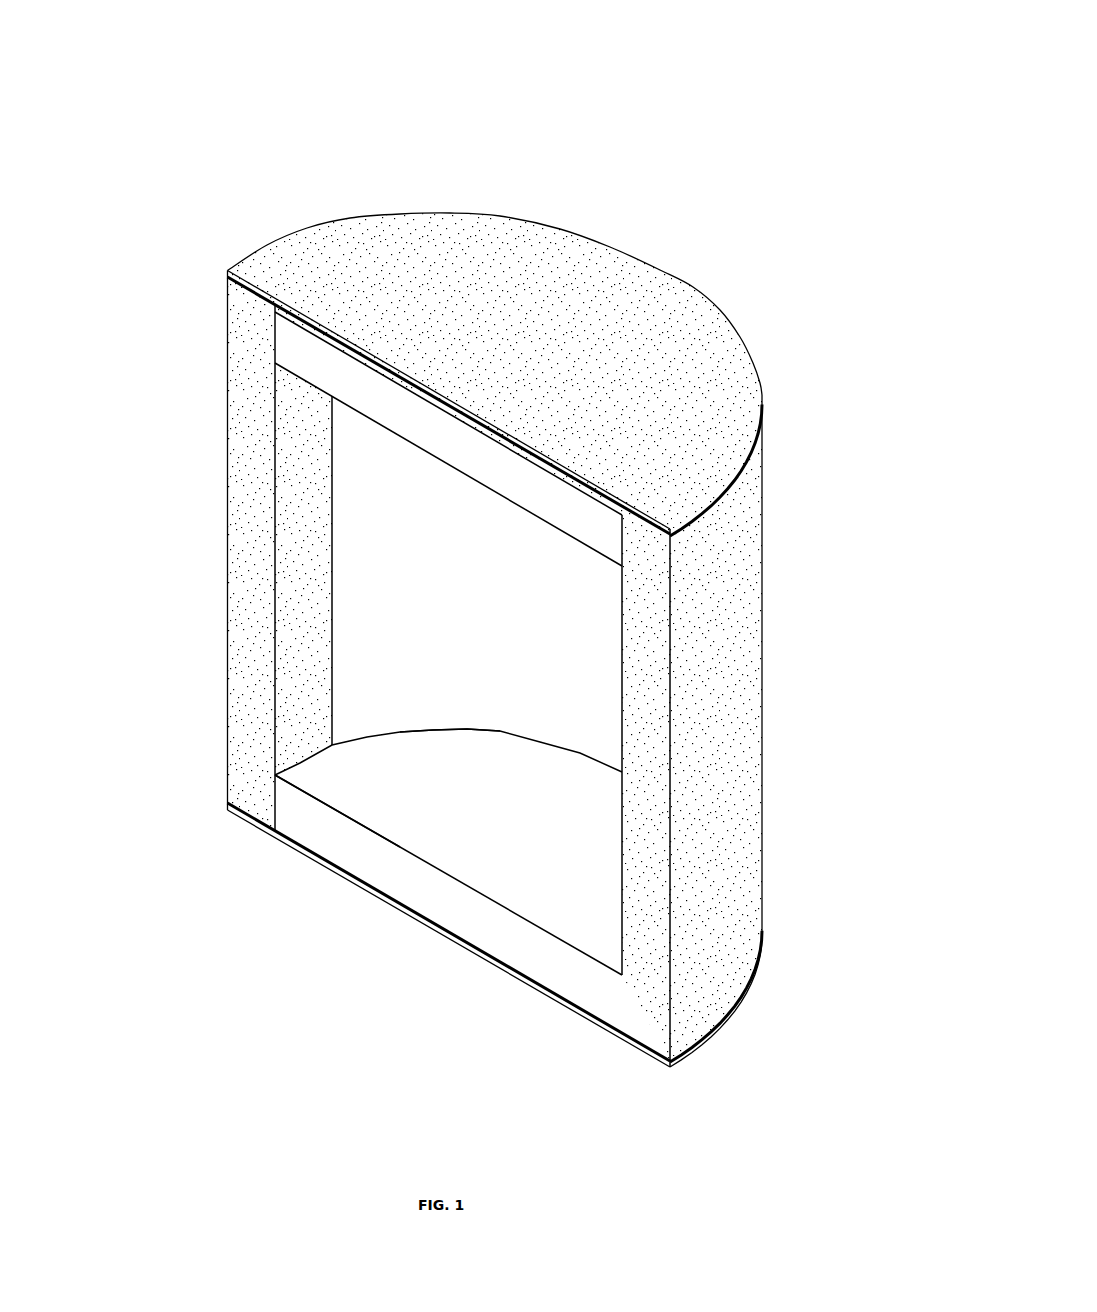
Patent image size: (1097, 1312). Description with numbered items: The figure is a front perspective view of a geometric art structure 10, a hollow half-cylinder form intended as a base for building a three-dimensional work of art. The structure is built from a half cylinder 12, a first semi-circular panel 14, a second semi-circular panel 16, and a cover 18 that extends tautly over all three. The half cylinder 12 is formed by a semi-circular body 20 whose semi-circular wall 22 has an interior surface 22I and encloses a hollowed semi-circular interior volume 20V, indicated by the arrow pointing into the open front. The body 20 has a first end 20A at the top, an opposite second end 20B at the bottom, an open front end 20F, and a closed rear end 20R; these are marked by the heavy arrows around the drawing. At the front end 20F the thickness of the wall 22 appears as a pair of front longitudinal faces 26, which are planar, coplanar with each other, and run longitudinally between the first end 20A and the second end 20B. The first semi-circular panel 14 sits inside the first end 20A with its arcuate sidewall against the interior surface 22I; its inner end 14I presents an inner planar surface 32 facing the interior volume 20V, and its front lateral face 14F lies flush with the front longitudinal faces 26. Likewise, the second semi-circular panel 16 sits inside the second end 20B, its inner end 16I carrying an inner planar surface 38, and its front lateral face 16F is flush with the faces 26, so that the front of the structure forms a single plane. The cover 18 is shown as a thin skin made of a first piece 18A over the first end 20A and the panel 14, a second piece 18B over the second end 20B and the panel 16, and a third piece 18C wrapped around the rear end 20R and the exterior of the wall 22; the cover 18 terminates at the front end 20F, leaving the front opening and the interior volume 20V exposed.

The geometric art structure 10 is at (501, 571).
The half cylinder 12 is at (232, 522).
The first semi-circular panel 14 is at (448, 462).
The inner end 14I is at (420, 455).
The front lateral face 14F is at (555, 500).
The second semi-circular panel 16 is at (448, 867).
The inner end 16I is at (505, 895).
The front lateral face 16F is at (367, 857).
The cover 18 is at (562, 653).
The first piece 18A is at (685, 310).
The second piece 18B is at (555, 1003).
The third piece 18C is at (750, 550).
The semi-circular body 20 is at (763, 628).
The first end 20A is at (441, 165).
The second end 20B is at (425, 993).
The front end 20F is at (176, 594).
The closed rear end 20R is at (795, 747).
The hollowed semi-circular interior volume 20V is at (393, 680).
The semi-circular wall 22 is at (672, 833).
The interior surface 22I is at (500, 651).
The pair of front longitudinal faces 26 is at (255, 418).
The inner planar surface 32 is at (368, 425).
The inner planar surface 38 is at (528, 798).